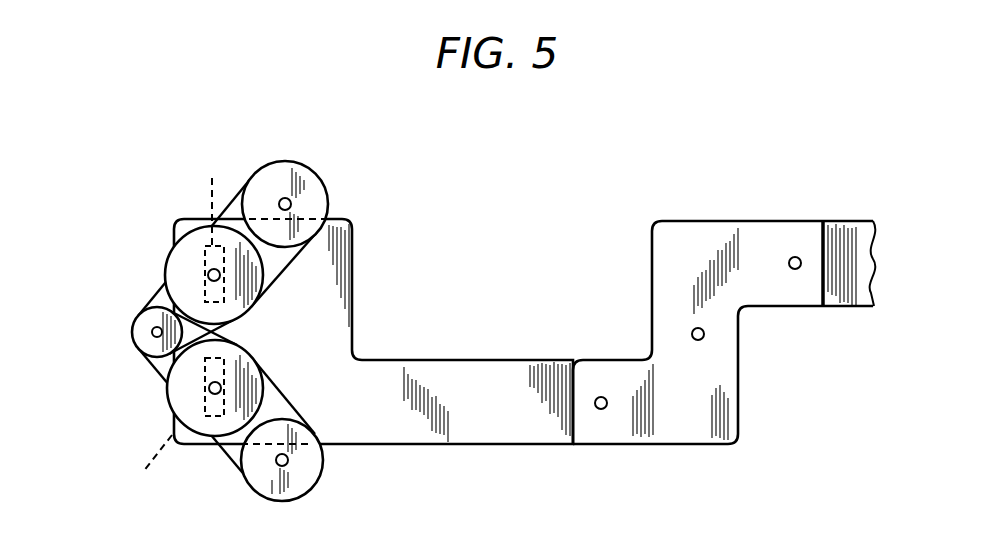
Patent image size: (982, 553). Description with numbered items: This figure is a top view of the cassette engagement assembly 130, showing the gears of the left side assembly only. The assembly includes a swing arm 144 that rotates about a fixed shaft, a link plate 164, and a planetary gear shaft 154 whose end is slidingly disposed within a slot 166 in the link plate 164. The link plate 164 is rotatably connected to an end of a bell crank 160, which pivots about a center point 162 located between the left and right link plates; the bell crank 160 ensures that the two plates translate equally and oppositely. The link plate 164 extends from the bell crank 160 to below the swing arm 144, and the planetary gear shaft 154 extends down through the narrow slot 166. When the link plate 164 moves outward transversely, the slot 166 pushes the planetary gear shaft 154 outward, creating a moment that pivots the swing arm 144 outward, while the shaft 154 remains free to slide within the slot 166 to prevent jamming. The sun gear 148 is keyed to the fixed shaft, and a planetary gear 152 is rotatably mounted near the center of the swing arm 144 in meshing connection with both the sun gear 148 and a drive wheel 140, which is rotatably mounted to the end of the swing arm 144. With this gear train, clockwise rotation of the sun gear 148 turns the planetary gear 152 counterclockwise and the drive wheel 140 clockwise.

The cassette engagement assembly 130 is at (493, 251).
The drive wheel 140 is at (327, 183).
The swing arm 144 is at (232, 457).
The sun gear 148 is at (141, 333).
The planetary gear 152 is at (167, 282).
The planetary gear shaft 154 is at (212, 273).
The bell crank 160 is at (718, 398).
The center point 162 is at (691, 335).
The link plate 164 is at (467, 382).
The slot 166 is at (212, 178).